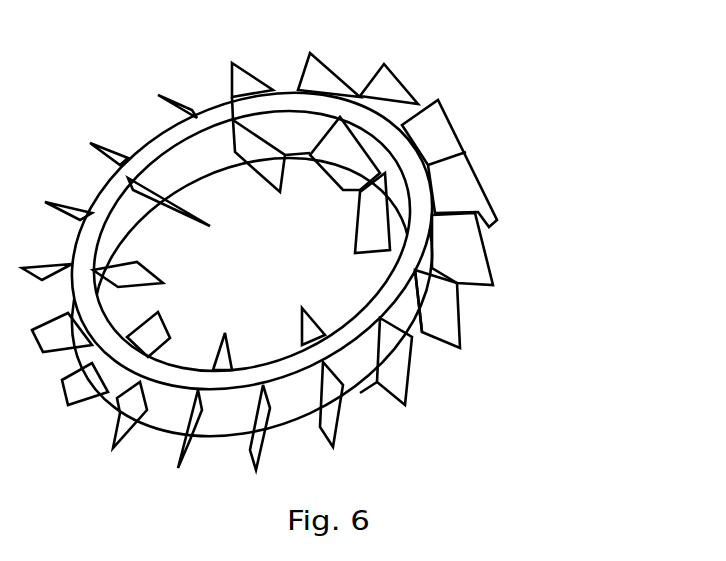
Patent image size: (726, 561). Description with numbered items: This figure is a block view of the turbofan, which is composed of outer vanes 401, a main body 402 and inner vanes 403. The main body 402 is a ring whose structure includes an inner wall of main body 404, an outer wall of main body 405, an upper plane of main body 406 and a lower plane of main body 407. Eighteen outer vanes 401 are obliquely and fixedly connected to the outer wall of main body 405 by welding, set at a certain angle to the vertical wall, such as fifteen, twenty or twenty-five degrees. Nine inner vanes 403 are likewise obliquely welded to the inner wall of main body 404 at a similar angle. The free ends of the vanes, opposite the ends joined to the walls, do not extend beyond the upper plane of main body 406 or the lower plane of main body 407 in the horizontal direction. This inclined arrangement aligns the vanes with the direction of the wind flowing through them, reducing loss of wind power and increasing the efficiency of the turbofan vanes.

The outer vanes 401 is at (435, 265).
The main body of turbofan 402 is at (445, 230).
The inner vanes 403 is at (190, 107).
The inner wall of main body 404 is at (290, 138).
The outer wall of main body 405 is at (440, 280).
The upper plane of main body 406 is at (293, 103).
The lower plane of main body 407 is at (422, 332).